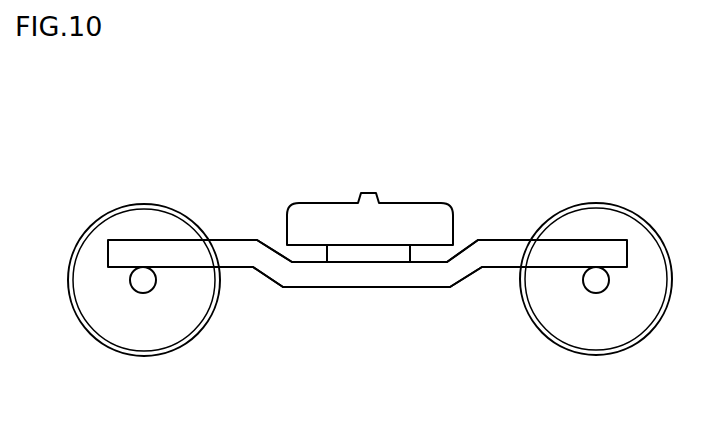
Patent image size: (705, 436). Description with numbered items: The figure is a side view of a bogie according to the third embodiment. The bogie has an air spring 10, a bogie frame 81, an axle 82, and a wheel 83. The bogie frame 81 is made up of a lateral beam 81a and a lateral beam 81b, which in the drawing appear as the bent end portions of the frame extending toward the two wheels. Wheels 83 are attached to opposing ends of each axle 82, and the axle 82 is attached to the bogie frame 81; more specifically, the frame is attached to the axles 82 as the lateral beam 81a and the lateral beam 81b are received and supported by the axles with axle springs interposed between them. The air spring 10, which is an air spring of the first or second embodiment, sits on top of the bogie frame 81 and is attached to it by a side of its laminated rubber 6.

The air spring 10 is at (370, 257).
The laminated rubber 6 is at (345, 252).
The bogie frame 81 is at (367, 317).
The lateral beam 81a is at (250, 258).
The lateral beam 81b is at (479, 297).
The axle 82 is at (145, 292).
The wheel 83 is at (192, 305).